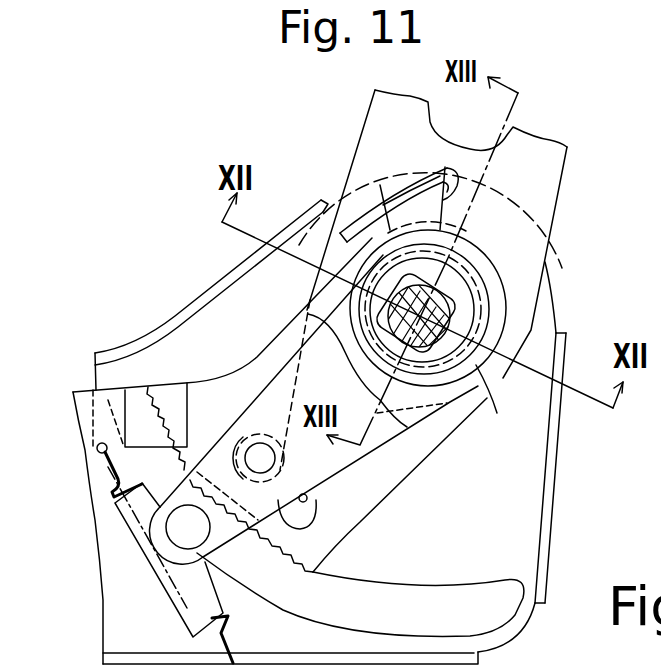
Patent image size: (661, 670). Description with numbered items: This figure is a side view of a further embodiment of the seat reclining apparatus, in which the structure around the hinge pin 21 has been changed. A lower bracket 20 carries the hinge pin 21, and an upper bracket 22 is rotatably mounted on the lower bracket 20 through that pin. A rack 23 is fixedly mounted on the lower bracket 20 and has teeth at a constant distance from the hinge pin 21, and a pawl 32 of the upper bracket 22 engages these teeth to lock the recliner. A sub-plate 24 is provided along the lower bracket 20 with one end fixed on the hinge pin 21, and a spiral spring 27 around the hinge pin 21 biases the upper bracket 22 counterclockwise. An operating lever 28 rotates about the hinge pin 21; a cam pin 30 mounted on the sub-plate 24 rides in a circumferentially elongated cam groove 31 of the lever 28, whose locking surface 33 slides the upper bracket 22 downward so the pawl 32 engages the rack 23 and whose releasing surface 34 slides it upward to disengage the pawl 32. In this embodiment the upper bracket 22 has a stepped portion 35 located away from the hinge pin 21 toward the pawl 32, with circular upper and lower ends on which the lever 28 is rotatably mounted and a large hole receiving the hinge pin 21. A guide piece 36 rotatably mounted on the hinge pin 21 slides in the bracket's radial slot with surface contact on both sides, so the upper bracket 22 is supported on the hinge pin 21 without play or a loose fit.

The lower bracket 20 is at (553, 520).
The hinge pin 21 is at (450, 308).
The upper bracket 22 is at (540, 190).
The rack 23 is at (443, 598).
The sub-plate 24 is at (173, 552).
The spiral spring 27 is at (362, 223).
The operating lever 28 is at (227, 383).
The cam pin 30 is at (270, 443).
The cam groove 31 is at (290, 573).
The pawl 32 is at (357, 540).
The locking surface 33 is at (217, 420).
The releasing surface 34 is at (306, 497).
The stepped portion 35 is at (460, 370).
The guide piece 36 is at (476, 365).